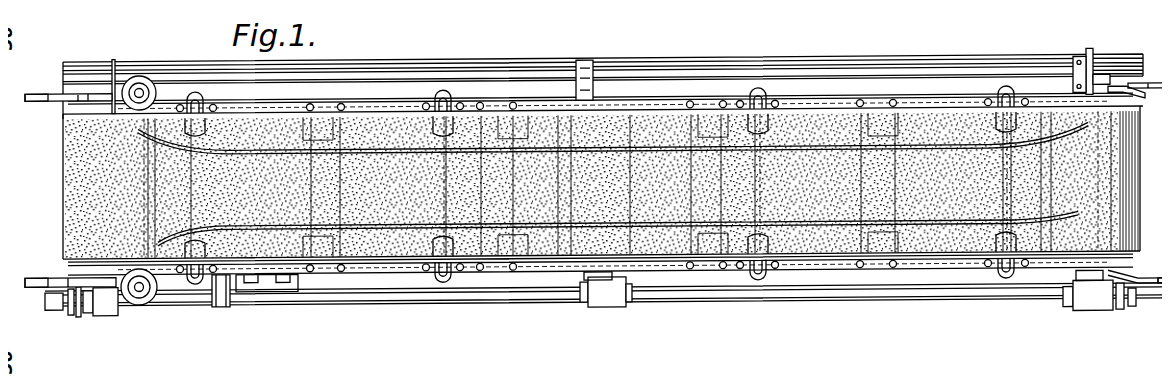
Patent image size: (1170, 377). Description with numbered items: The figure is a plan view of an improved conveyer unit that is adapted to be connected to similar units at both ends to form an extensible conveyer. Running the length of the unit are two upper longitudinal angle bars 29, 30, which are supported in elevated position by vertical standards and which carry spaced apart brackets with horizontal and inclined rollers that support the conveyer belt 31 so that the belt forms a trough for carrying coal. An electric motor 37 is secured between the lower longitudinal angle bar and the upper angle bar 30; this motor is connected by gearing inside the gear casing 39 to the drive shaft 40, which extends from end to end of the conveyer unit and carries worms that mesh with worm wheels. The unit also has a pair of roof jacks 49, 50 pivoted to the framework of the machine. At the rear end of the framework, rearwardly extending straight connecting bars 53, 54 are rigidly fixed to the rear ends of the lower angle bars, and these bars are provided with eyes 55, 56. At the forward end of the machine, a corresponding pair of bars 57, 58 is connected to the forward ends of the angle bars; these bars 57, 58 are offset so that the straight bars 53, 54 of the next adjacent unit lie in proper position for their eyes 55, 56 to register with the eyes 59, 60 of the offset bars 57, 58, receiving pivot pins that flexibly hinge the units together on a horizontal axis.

The upper longitudinal angle bar 29 is at (366, 100).
The upper longitudinal angle bar 30 is at (378, 261).
The conveyer belt 31 is at (800, 243).
The electric motor 37 is at (258, 284).
The gear casing 39 is at (215, 300).
The drive shaft 40 is at (497, 296).
The roof jack 49 is at (143, 72).
The roof jack 50 is at (137, 298).
The connecting bar 53 is at (47, 269).
The connecting bar 54 is at (45, 96).
The eye 55 is at (28, 270).
The eye 56 is at (29, 85).
The offset bar 57 is at (1126, 269).
The offset bar 58 is at (1128, 82).
The eye 59 is at (1158, 268).
The eye 60 is at (1152, 75).